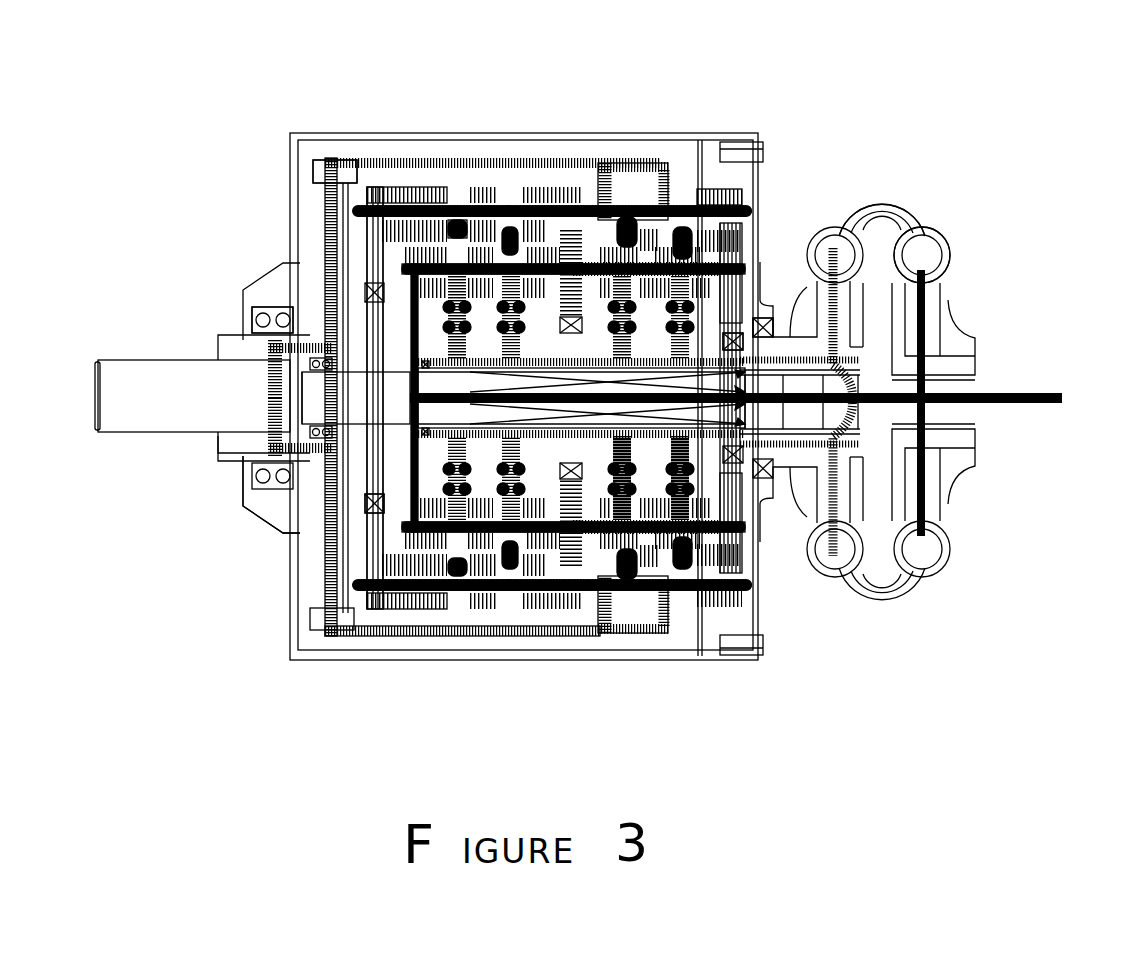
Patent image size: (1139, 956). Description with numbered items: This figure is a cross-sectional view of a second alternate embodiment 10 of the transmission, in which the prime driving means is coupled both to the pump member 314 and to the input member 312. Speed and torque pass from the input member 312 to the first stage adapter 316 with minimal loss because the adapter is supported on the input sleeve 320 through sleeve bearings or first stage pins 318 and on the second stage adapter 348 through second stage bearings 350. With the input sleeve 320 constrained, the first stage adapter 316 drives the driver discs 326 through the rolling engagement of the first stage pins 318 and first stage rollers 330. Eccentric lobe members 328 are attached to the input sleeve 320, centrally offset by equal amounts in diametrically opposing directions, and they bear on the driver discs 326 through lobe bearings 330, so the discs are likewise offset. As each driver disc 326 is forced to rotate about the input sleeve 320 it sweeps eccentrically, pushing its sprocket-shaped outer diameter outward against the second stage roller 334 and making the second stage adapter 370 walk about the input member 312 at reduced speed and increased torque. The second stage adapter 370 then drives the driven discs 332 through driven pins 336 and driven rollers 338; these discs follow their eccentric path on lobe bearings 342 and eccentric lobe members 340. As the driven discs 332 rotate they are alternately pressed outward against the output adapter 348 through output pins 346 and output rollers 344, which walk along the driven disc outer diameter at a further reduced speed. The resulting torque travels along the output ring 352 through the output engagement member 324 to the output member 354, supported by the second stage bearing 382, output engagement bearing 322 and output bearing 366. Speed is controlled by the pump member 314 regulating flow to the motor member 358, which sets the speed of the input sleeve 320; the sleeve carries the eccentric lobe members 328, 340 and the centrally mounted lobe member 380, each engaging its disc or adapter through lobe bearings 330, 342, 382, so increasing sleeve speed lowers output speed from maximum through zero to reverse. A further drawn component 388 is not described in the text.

The electric machine 10 is at (264, 40).
The input member 312 is at (975, 400).
The pump member 314 is at (947, 238).
The first stage adapter 316 is at (365, 318).
The first stage pins 318 is at (640, 393).
The input sleeve 320 is at (748, 358).
The output engagement bearing 322 is at (292, 430).
The output engagement member 324 is at (328, 583).
The driver discs 326 is at (443, 560).
The eccentric lobe members 328 is at (477, 318).
The first stage rollers 330 is at (447, 197).
The driven discs 332 is at (660, 200).
The second stage roller 334 is at (500, 207).
The driven pins 336 is at (718, 526).
The driven rollers 338 is at (622, 205).
The eccentric lobe members 340 is at (645, 318).
The lobe bearings 342 is at (657, 478).
The output rollers 344 is at (617, 597).
The output pins 346 is at (740, 556).
The output adapter 348 is at (742, 195).
The second stage bearings 350 is at (758, 325).
The output ring 352 is at (525, 640).
The output member 354 is at (145, 385).
The motor member 358 is at (870, 182).
The output bearing 366 is at (268, 310).
The second stage adapter 370 is at (362, 547).
The centrally mounted lobe member 380 is at (601, 478).
The second stage bearing 382 is at (365, 502).
The rotor shell 388 is at (405, 268).